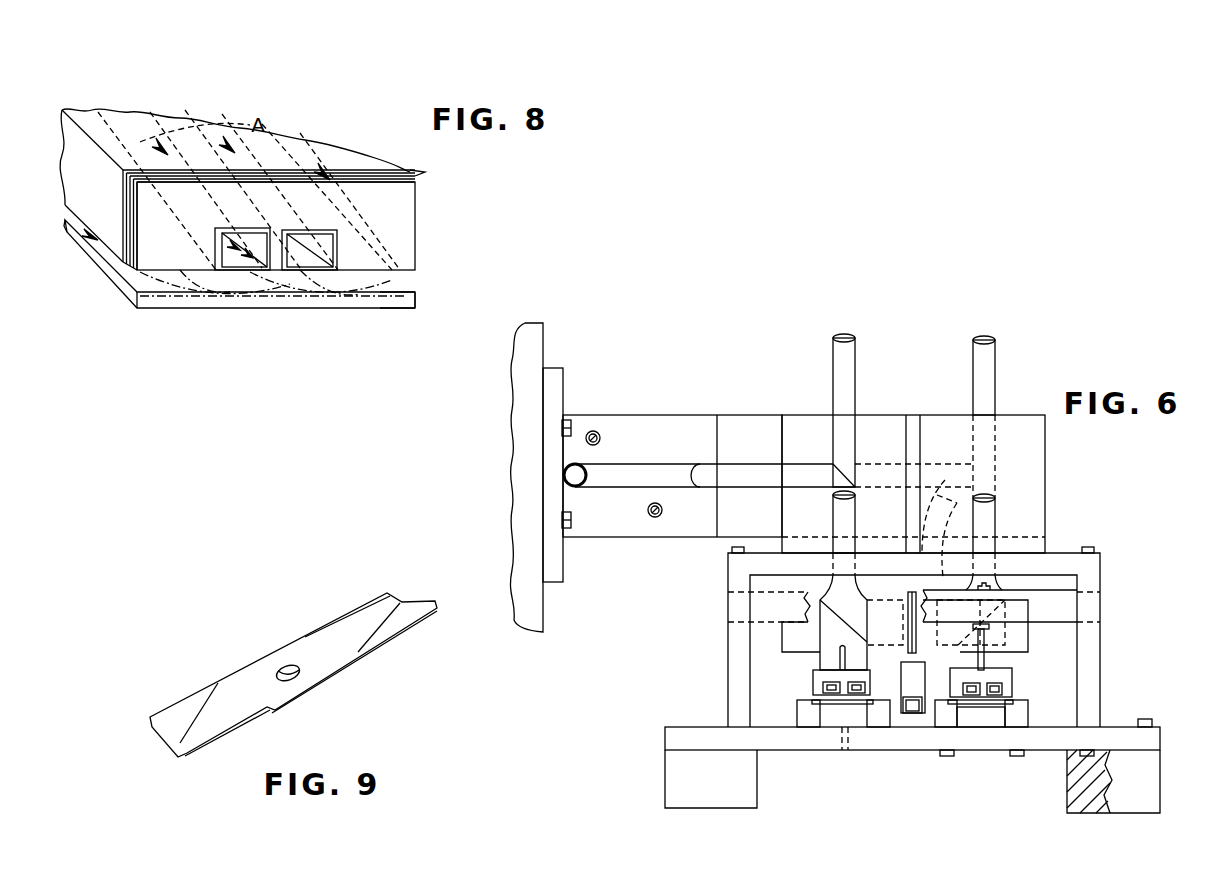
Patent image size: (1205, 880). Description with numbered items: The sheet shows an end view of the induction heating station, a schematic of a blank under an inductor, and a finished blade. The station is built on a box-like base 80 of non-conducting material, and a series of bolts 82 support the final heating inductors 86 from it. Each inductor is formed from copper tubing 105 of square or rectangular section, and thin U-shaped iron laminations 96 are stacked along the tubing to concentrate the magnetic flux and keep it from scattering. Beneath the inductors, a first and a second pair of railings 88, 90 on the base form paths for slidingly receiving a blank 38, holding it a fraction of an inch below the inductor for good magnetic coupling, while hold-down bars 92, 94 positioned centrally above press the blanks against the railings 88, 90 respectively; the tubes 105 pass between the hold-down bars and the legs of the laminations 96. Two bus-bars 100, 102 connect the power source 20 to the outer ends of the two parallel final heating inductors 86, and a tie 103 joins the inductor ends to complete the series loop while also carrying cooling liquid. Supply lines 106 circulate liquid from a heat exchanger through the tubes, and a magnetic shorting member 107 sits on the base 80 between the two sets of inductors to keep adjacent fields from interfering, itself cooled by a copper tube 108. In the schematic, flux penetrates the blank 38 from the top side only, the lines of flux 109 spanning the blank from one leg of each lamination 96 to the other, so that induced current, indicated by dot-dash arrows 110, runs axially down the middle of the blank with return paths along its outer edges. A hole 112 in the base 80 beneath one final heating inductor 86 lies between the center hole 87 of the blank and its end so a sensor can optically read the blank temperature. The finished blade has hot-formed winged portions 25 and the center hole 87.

In FIG. 6, the power source 20 is at (543, 340).
In FIG. 9, the winged portions 25 is at (415, 603).
In FIG. 8, the blank 38 is at (172, 307).
In FIG. 9, the blank 38 is at (352, 620).
In FIG. 6, the blank 38 is at (812, 700).
In FIG. 6, the base 80 is at (665, 774).
In FIG. 6, the bolts 82 is at (987, 642).
In FIG. 6, the final heating inductors 86 is at (813, 672).
In FIG. 9, the center hole 87 is at (298, 665).
In FIG. 6, the first pair of railings 88 is at (820, 719).
In FIG. 6, the second pair of railings 90 is at (957, 719).
In FIG. 6, the hold-down bar 92 is at (797, 713).
In FIG. 6, the hold-down bar 94 is at (1028, 719).
In FIG. 8, the U-shaped iron laminations 96 is at (425, 172).
In FIG. 6, the bus-bar 100 is at (1045, 417).
In FIG. 6, the second bus-bar 102 is at (712, 537).
In FIG. 6, the tie 103 is at (898, 607).
In FIG. 8, the copper tubing 105 is at (242, 258).
In FIG. 6, the copper tubing 105 is at (843, 690).
In FIG. 6, the supply lines 106 is at (855, 363).
In FIG. 6, the magnetic shorting member 107 is at (920, 686).
In FIG. 6, the copper tube 108 is at (915, 713).
In FIG. 8, the lines of flux 109 is at (398, 303).
In FIG. 8, the dot-dash arrows 110 is at (207, 290).
In FIG. 6, the hole 112 is at (845, 752).